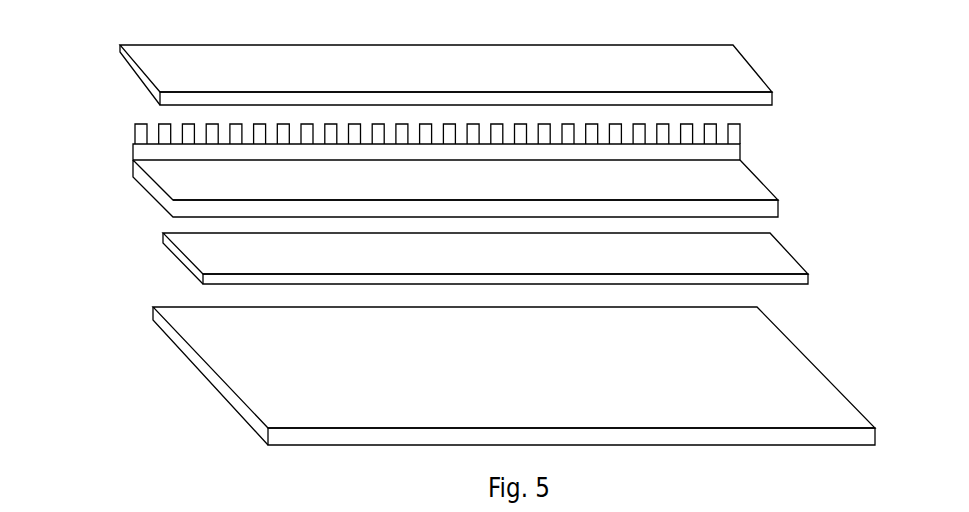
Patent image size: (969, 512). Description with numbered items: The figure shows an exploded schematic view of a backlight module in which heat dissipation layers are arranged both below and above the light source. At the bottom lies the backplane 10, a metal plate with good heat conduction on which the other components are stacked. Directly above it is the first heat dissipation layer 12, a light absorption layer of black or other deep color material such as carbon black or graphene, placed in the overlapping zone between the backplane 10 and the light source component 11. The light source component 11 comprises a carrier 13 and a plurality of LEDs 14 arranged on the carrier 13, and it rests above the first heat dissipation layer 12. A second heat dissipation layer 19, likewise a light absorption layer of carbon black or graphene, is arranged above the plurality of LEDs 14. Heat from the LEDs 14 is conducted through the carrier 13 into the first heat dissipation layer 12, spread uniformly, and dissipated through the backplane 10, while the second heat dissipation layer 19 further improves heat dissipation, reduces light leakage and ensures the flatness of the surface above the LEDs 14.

The backplane 10 is at (168, 329).
The light source component 11 is at (447, 166).
The first heat dissipation layer 12 is at (165, 245).
The carrier 13 is at (142, 178).
The LEDs 14 is at (142, 138).
The second heat dissipation layer 19 is at (130, 60).